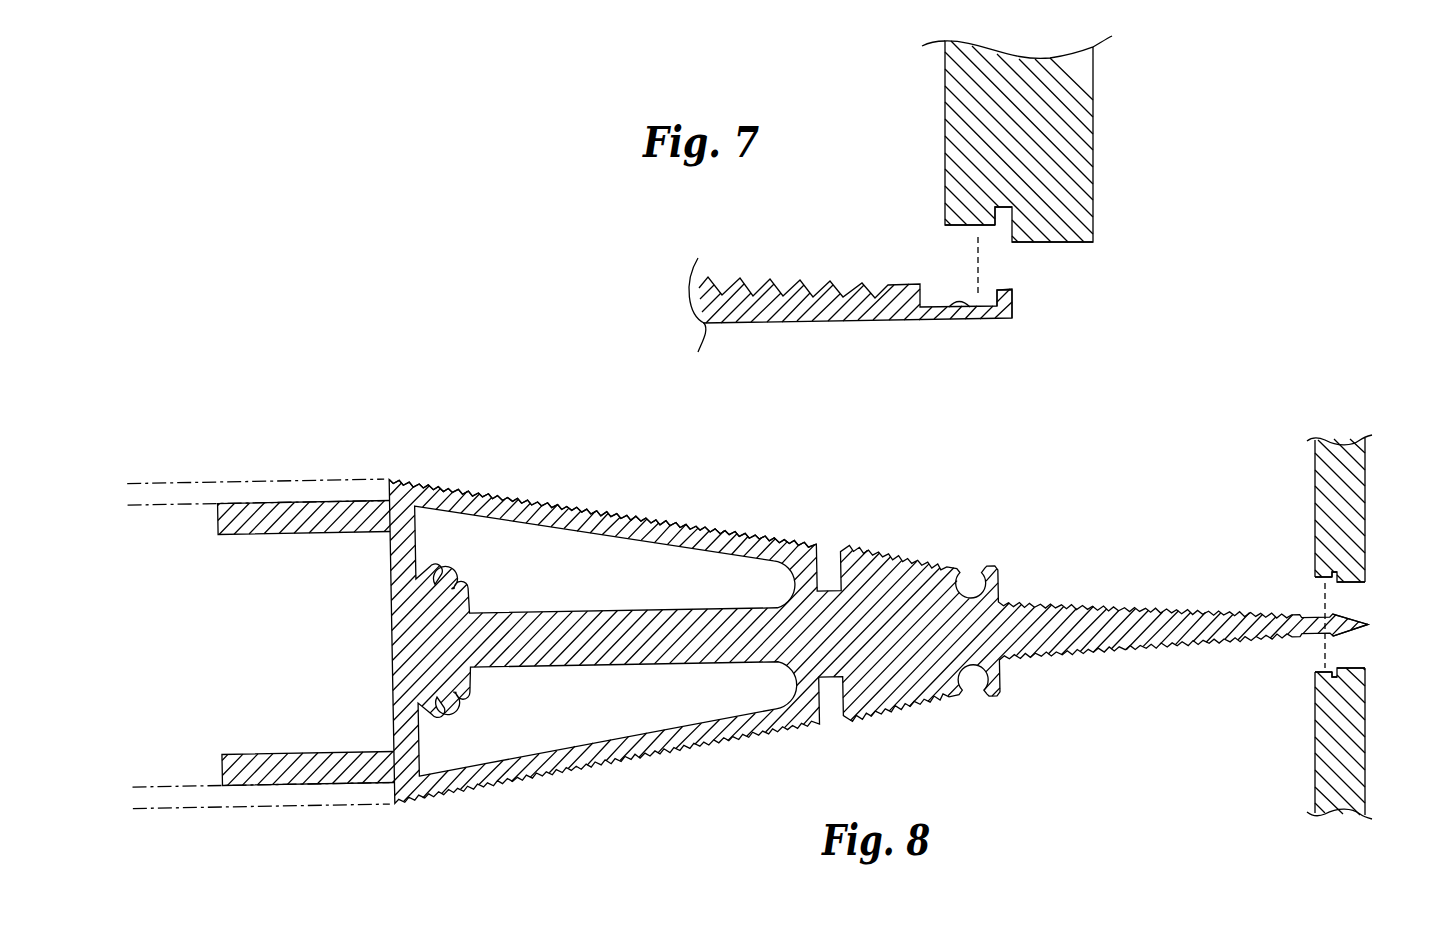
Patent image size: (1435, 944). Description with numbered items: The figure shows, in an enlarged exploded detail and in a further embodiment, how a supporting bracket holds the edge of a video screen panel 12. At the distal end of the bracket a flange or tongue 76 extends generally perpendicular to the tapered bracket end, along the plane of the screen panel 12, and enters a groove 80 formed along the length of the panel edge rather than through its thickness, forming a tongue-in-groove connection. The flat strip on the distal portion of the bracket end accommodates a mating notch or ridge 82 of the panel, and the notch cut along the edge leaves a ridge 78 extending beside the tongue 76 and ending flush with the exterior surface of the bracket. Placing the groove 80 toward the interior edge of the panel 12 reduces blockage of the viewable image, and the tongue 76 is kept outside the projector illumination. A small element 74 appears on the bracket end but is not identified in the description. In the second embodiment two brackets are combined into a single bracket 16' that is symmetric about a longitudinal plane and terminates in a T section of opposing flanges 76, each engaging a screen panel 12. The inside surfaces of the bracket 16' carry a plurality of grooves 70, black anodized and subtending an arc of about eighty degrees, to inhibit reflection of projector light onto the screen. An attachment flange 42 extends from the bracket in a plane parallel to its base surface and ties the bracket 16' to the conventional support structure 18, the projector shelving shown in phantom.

In FIG. 7, the video screen panel 12 is at (1073, 109).
In FIG. 8, the video screen panel 12 is at (1339, 627).
In FIG. 8, the bracket 16' is at (793, 666).
In FIG. 8, the conventional support structure 18 is at (184, 493).
In FIG. 8, the attachment flange 42 is at (291, 508).
In FIG. 8, the grooves 70 is at (628, 503).
In FIG. 7, the bead 74 is at (968, 309).
In FIG. 7, the flange or tongue 76 is at (1013, 296).
In FIG. 8, the flange or tongue 76 is at (1368, 621).
In FIG. 7, the ridge 78 is at (1059, 243).
In FIG. 8, the ridge 78 is at (1352, 583).
In FIG. 7, the groove 80 is at (996, 206).
In FIG. 8, the groove 80 is at (1332, 568).
In FIG. 7, the notch or ridge 82 is at (968, 227).
In FIG. 8, the notch or ridge 82 is at (1322, 575).